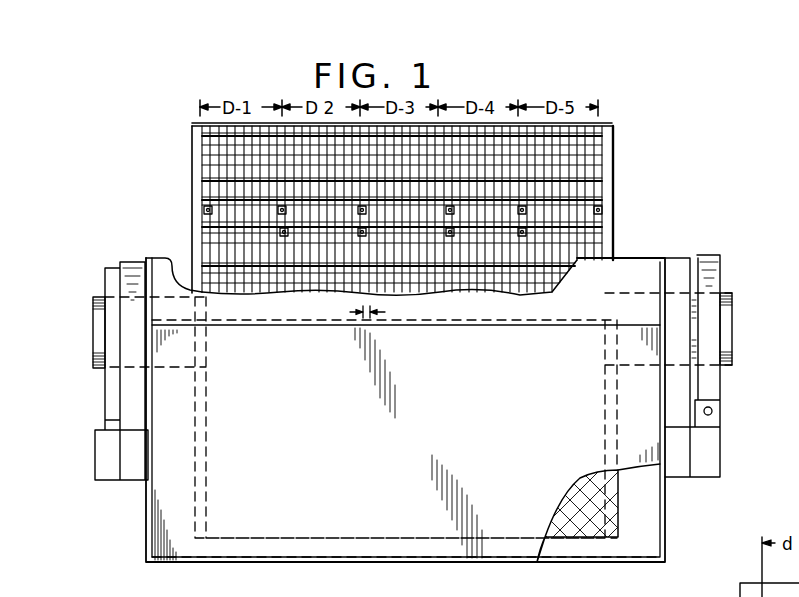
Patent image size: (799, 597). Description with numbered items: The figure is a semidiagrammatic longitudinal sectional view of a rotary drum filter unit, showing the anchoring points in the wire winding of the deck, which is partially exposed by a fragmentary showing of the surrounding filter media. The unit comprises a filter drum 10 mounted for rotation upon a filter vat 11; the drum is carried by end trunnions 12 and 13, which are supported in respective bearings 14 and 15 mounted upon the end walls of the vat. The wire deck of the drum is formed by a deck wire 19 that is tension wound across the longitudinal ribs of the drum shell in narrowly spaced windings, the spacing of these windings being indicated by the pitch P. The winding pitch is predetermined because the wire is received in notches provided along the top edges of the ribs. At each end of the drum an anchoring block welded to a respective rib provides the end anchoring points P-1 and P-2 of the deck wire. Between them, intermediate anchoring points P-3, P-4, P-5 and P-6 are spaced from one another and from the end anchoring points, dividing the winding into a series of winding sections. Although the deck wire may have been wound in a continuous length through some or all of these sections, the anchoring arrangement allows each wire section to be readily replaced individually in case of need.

The filter drum 10 is at (420, 209).
The filter vat 11 is at (640, 262).
The end trunnion 12 is at (95, 310).
The end trunnion 13 is at (728, 318).
The bearing 14 is at (138, 270).
The bearing 15 is at (722, 275).
The deck wire 19 is at (232, 200).
The end anchoring point P-1 is at (204, 210).
The end anchoring point P-2 is at (602, 210).
The intermediate anchoring point P-3 is at (276, 222).
The intermediate anchoring point P-4 is at (357, 222).
The intermediate anchoring point P-5 is at (445, 218).
The intermediate anchoring point P-6 is at (520, 218).
The pitch P is at (375, 325).